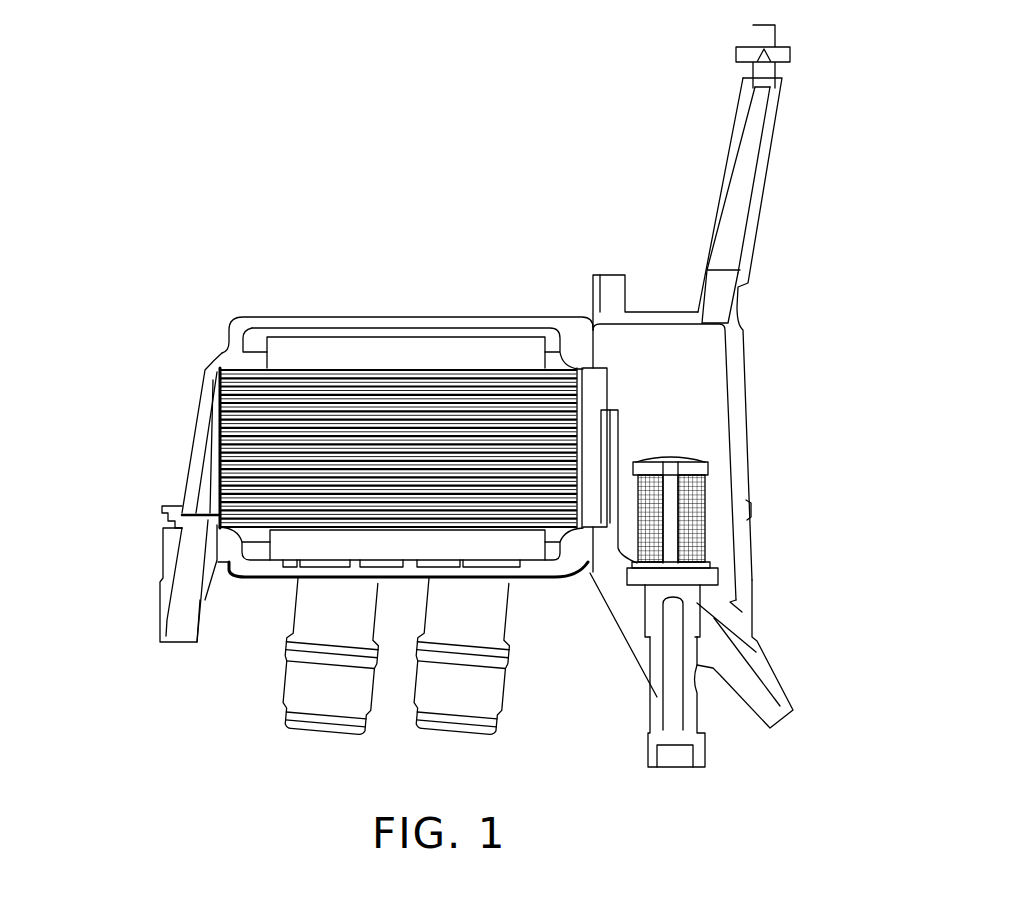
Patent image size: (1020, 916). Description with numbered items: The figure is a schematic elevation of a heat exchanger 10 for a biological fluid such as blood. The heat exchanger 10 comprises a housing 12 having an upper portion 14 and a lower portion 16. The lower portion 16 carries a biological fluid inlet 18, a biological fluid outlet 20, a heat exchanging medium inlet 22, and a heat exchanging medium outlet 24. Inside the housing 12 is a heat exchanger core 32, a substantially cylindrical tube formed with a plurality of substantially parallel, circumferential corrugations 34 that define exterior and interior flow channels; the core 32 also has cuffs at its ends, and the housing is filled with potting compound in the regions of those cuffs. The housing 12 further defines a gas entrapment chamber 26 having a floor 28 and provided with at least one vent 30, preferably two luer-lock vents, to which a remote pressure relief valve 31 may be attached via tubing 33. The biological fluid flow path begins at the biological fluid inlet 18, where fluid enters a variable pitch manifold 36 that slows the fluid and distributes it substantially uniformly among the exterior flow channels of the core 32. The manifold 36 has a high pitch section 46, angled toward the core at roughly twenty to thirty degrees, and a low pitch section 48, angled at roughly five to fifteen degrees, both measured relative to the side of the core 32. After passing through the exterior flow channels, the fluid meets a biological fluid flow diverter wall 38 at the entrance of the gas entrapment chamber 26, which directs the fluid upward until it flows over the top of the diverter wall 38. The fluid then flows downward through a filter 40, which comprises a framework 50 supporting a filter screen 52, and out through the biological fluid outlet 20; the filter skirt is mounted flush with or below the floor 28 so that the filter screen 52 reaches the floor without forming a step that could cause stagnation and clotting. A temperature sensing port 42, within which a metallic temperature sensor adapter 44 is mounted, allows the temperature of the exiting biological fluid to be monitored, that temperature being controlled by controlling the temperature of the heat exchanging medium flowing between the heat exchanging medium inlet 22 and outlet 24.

The heat exchanger 10 is at (350, 236).
The housing 12 is at (197, 398).
The upper portion 14 is at (484, 325).
The lower portion 16 is at (583, 563).
The biological fluid inlet 18 is at (163, 608).
The biological fluid outlet 20 is at (786, 686).
The heat exchanging medium inlet 22 is at (487, 708).
The heat exchanging medium outlet 24 is at (362, 712).
The gas entrapment chamber 26 is at (715, 407).
The floor 28 is at (720, 560).
The vent 30 is at (627, 285).
The remote pressure relief valve 31 is at (362, 352).
The heat exchanger core 32 is at (250, 395).
The tubing 33 is at (777, 183).
The corrugations 34 is at (222, 452).
The variable pitch manifold 36 is at (183, 477).
The biological fluid flow diverter wall 38 is at (619, 432).
The filter 40 is at (700, 490).
The temperature sensing port 42 is at (642, 652).
The metallic temperature sensor adapter 44 is at (668, 706).
The high pitch section 46 is at (203, 498).
The low pitch section 48 is at (215, 428).
The framework 50 is at (672, 530).
The filter screen 52 is at (700, 512).